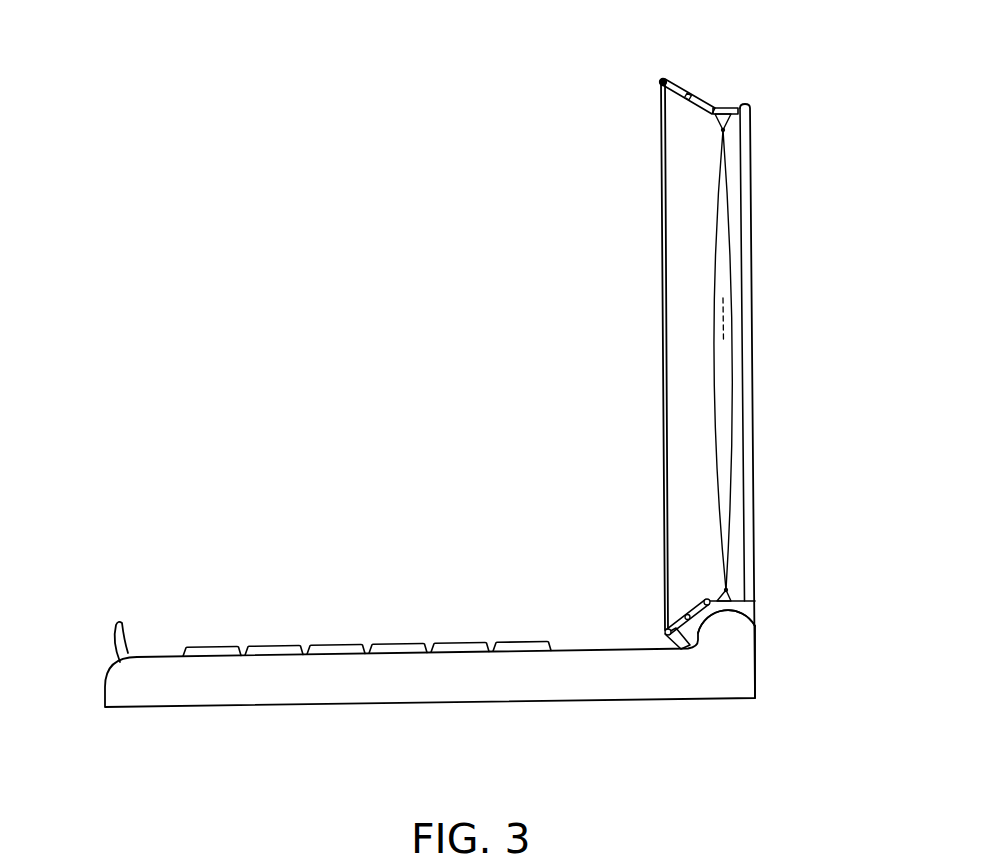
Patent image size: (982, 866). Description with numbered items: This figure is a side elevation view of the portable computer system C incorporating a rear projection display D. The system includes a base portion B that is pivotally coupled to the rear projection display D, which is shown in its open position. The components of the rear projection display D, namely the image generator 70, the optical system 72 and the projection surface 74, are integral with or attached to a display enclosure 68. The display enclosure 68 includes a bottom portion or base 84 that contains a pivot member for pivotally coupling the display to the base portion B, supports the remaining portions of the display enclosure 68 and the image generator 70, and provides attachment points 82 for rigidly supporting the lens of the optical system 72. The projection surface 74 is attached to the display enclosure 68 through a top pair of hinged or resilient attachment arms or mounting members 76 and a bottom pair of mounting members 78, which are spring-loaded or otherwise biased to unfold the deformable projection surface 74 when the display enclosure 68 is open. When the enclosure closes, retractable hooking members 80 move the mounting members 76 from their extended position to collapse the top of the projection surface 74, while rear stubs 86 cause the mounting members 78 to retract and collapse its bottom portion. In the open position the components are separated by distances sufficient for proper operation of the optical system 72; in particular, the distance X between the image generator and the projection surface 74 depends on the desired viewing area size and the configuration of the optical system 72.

The display enclosure 68 is at (743, 160).
The image generator 70 is at (742, 354).
The optical system 72 is at (733, 240).
The projection surface 74 is at (658, 170).
The top pair of hinged or resilient attachment arms or mounting members 76 is at (704, 101).
The bottom pair of hinged or resilient attachment arms or mounting members 78 is at (683, 614).
The retractable hooking members 80 is at (112, 638).
The attachment points 82 is at (717, 122).
The base 84 is at (755, 611).
The rear stubs 86 is at (668, 640).
The base portion B is at (432, 688).
The portable computer system C is at (360, 265).
The rear projection display D is at (772, 52).
The distance X is at (714, 320).